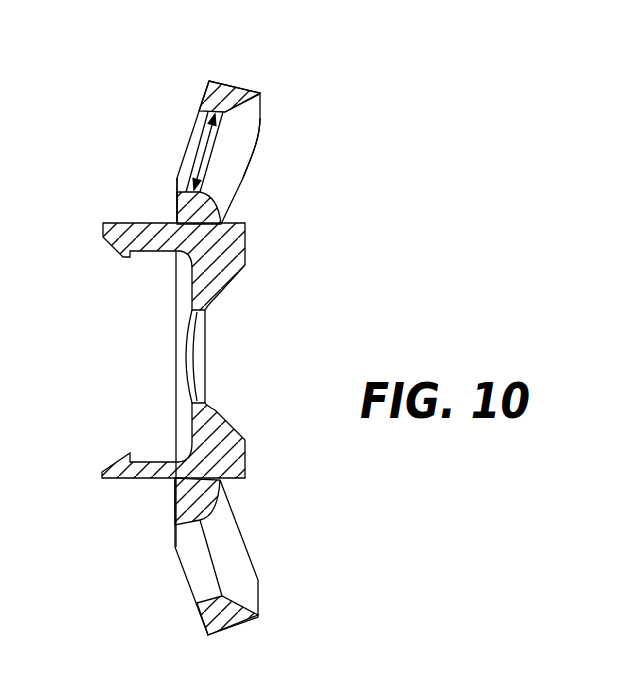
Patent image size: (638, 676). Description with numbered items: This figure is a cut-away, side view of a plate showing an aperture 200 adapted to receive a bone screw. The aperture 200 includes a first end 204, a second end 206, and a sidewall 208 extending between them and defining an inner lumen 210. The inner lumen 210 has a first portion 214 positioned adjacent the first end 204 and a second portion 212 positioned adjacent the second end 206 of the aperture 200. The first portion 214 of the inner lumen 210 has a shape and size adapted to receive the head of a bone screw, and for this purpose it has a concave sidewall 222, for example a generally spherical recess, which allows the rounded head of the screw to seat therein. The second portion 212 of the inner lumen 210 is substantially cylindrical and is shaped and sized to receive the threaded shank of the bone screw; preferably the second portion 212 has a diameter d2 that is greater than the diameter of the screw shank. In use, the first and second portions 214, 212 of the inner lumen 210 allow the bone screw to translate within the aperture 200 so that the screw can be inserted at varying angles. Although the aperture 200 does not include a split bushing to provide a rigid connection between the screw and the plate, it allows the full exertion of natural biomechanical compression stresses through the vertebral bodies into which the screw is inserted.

The aperture 200 is at (322, 123).
The first end 204 is at (252, 179).
The second end 206 is at (182, 142).
The sidewall 208 is at (223, 104).
The inner lumen 210 is at (245, 150).
The second portion 212 is at (187, 167).
The first portion 214 is at (218, 193).
The concave sidewall 222 is at (254, 112).
The diameter of the second portion d2 is at (206, 134).